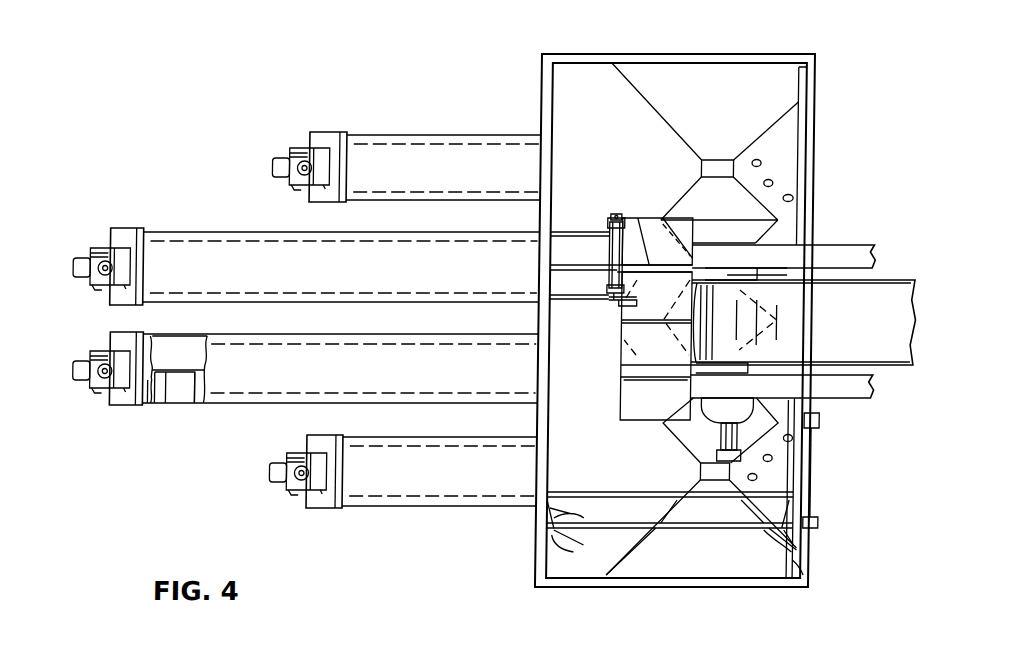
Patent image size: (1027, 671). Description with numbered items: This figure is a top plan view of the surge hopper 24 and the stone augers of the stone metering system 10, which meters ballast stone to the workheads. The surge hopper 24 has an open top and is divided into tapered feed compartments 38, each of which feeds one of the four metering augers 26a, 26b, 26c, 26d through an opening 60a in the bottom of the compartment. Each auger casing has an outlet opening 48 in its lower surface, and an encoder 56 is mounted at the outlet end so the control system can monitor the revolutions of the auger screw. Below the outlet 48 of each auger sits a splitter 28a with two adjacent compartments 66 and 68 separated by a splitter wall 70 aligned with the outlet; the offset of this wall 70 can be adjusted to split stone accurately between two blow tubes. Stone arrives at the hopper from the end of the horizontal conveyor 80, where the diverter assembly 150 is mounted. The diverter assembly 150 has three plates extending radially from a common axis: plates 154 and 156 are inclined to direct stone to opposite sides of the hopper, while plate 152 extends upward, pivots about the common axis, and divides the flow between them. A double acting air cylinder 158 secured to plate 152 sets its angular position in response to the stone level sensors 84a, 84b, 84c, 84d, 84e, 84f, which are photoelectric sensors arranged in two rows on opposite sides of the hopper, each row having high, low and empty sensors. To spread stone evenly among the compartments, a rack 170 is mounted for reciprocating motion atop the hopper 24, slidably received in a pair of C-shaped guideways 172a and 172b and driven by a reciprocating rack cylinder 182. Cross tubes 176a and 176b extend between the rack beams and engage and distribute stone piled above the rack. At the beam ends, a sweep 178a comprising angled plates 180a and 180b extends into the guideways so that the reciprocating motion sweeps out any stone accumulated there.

The stone metering system 10 is at (399, 72).
The surge hopper 24 is at (598, 51).
The metering auger 26a is at (390, 513).
The metering auger 26b is at (222, 330).
The metering auger 26c is at (178, 222).
The metering auger 26d is at (366, 124).
The encoder 56 is at (273, 166).
The splitter compartment 68 is at (182, 368).
The splitter compartment 66 is at (182, 400).
The splitter wall 70 is at (153, 412).
The splitter 28a is at (176, 412).
The outlet opening 48 is at (202, 412).
The feed compartment 38 is at (620, 160).
The diverter assembly 150 is at (609, 212).
The double acting air cylinder 158 is at (609, 252).
The diverter plate 154 is at (625, 222).
The sweep plate 180b is at (608, 235).
The cross tube 176a is at (605, 296).
The cross tube 176b is at (618, 300).
The diverter plate 152 is at (645, 350).
The diverter plate 156 is at (645, 382).
The opening 60a is at (723, 168).
The high stone level sensor 84a is at (795, 198).
The low stone level sensor 84b is at (773, 182).
The empty stone level sensor 84c is at (763, 162).
The high stone level sensor 84d is at (798, 438).
The low stone level sensor 84e is at (778, 458).
The stone level sensor 84f is at (763, 477).
The horizontal conveyor 80 is at (893, 276).
The rack cylinder 182 is at (822, 503).
The C-shaped guideway 172a is at (815, 563).
The C-shaped guideway 172b is at (556, 565).
The sweep plate 180a is at (566, 546).
The sweep 178a is at (576, 538).
The rack 170 is at (681, 533).